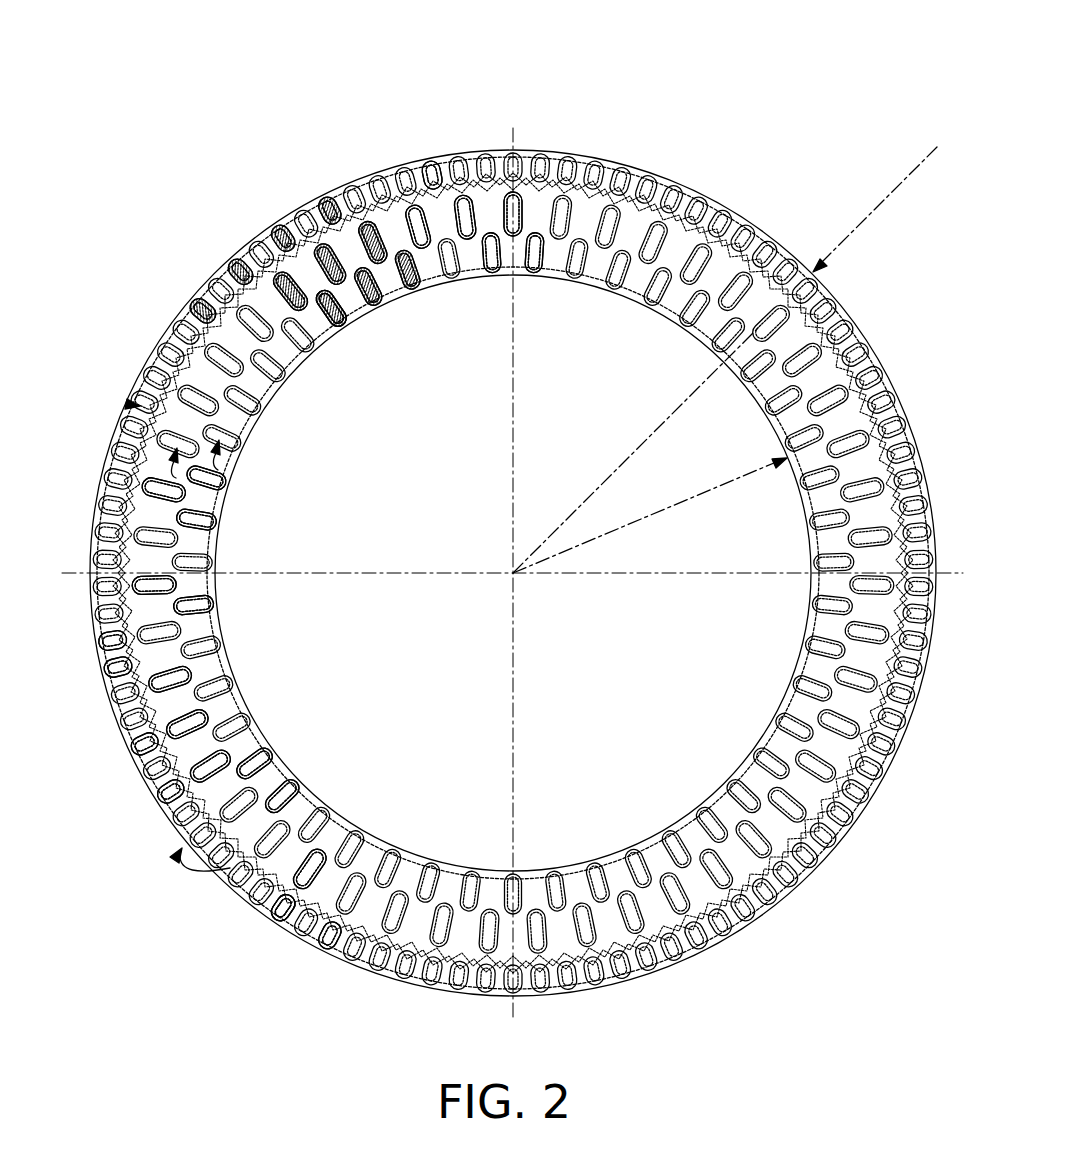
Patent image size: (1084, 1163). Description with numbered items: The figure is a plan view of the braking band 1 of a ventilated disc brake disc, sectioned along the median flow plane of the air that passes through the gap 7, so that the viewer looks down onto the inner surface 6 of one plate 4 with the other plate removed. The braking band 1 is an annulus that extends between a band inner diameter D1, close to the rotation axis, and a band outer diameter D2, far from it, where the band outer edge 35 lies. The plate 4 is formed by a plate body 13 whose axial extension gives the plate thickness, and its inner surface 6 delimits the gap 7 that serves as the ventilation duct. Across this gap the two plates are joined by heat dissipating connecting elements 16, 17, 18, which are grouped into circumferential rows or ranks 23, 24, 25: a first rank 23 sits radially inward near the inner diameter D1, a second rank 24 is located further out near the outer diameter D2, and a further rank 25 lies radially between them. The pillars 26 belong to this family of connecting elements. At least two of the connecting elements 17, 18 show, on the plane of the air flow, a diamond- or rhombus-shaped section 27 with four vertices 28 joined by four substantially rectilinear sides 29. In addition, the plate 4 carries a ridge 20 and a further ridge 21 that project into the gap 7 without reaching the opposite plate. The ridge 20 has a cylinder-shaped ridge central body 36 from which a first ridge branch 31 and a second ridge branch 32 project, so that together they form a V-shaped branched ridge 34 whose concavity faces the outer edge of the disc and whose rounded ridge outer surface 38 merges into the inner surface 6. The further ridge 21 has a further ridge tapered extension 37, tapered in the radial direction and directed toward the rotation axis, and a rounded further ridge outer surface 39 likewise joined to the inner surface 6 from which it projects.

The braking band 1 is at (248, 82).
The plate 4 is at (382, 162).
The inner surface 6 is at (410, 258).
The gap 7 is at (322, 332).
The plate body 13 is at (458, 240).
The connecting elements 16 is at (396, 168).
The connecting elements 17 is at (488, 195).
The connecting elements 18 is at (392, 298).
The ridge 20 is at (446, 186).
The further ridge 21 is at (433, 152).
The rank 23 is at (222, 468).
The rank 24 is at (127, 404).
The rank 25 is at (206, 505).
The pillars 26 is at (118, 455).
The diamond- or rhombus-shaped section 27 is at (181, 566).
The vertices 28 is at (172, 608).
The sides 29 is at (212, 650).
The first ridge branch 31 is at (207, 790).
The second ridge branch 32 is at (170, 750).
The branched ridge 34 is at (240, 792).
The band outer edge 35 is at (283, 836).
The ridge central body 36 is at (243, 772).
The further ridge tapered extension 37 is at (332, 908).
The ridge outer surface 38 is at (302, 866).
The further ridge outer surface 39 is at (382, 966).
The band inner diameter D1 is at (725, 485).
The band outer diameter D2 is at (866, 218).